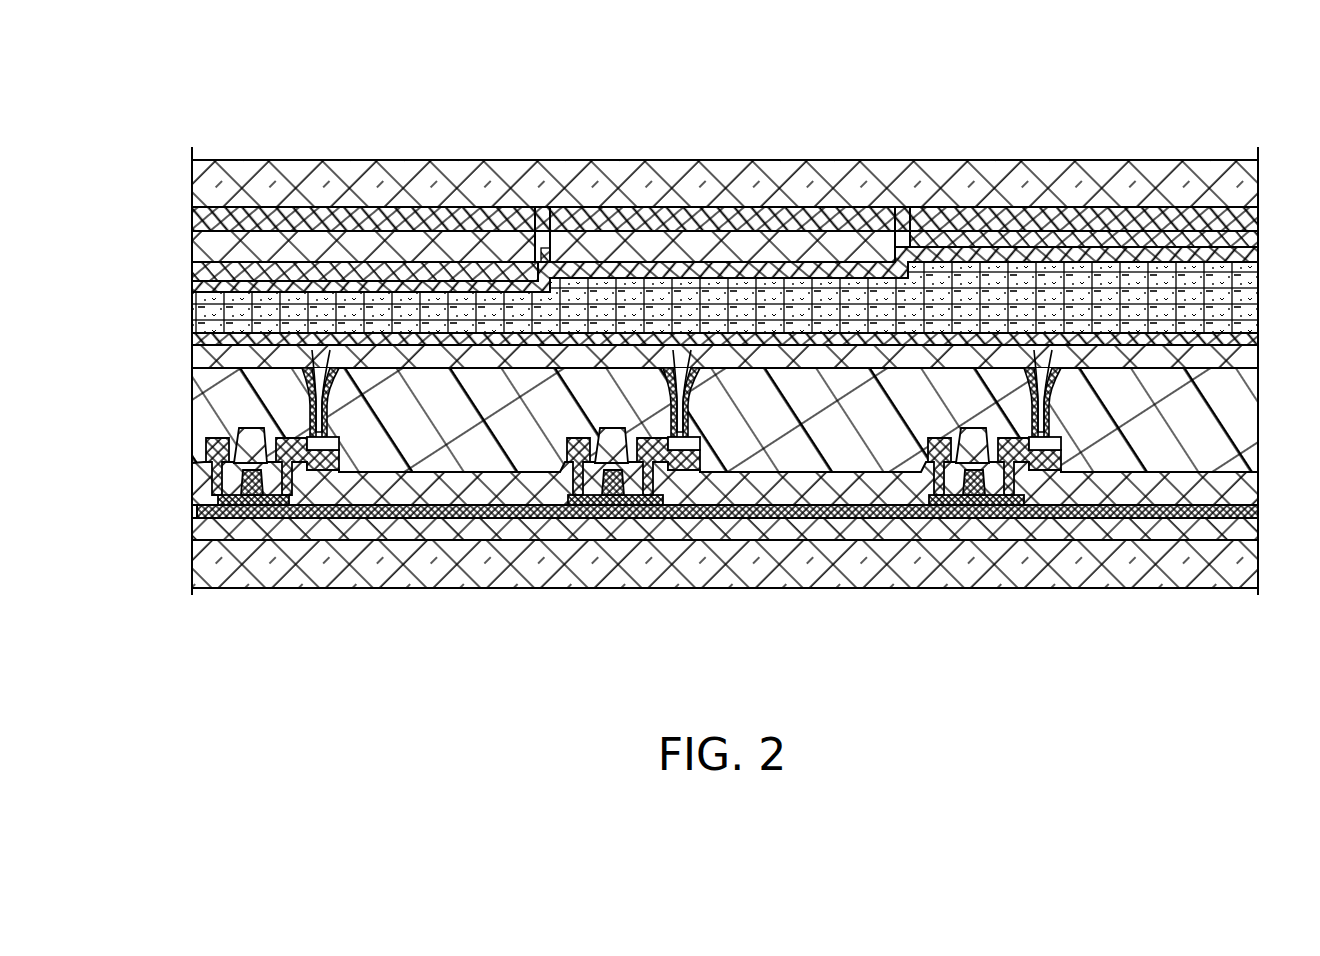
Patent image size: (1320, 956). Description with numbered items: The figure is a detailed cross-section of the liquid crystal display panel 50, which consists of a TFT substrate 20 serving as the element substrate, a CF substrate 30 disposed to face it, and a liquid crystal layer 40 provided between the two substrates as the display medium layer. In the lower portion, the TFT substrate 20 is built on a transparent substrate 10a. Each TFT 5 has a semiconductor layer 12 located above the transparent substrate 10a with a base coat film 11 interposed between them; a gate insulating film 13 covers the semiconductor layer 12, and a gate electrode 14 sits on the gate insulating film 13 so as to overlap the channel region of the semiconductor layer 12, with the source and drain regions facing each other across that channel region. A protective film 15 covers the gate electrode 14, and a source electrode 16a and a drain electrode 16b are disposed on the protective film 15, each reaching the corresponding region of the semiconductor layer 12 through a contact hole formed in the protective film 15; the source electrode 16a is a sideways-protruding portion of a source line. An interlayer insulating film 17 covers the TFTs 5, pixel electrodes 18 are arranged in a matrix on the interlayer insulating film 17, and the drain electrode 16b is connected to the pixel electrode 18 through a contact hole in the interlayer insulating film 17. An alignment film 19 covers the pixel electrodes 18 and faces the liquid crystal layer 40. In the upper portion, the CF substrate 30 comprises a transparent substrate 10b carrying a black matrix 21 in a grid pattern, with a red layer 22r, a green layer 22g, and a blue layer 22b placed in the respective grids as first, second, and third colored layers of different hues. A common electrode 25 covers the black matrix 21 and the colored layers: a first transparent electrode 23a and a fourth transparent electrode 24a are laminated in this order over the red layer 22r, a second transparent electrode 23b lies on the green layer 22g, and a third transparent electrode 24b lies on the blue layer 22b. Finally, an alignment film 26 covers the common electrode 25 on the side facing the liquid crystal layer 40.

The liquid crystal display panel 50 is at (706, 339).
The CF substrate 30 is at (706, 202).
The liquid crystal layer 40 is at (1272, 294).
The TFT substrate 20 is at (706, 481).
The transparent substrate 10b is at (200, 184).
The transparent substrate 10a is at (195, 570).
The red layer 22r is at (262, 212).
The green layer 22g is at (645, 220).
The blue layer 22b is at (1000, 220).
The black matrix 21 is at (902, 215).
The first transparent electrode 23a is at (333, 248).
The second transparent electrode 23b is at (742, 248).
The fourth transparent electrode 24a is at (397, 272).
The third transparent electrode 24b is at (1080, 240).
The common electrode 25 is at (334, 188).
The alignment film 26 is at (192, 288).
The alignment film 19 is at (192, 339).
The pixel electrode 18 is at (192, 357).
The interlayer insulating film 17 is at (203, 398).
The protective film 15 is at (200, 468).
The gate electrode 14 is at (963, 503).
The gate insulating film 13 is at (200, 506).
The semiconductor layer 12 is at (984, 496).
The base coat film 11 is at (195, 528).
The source electrode 16a is at (928, 458).
The drain electrode 16b is at (1058, 470).
The TFT 5 is at (638, 508).